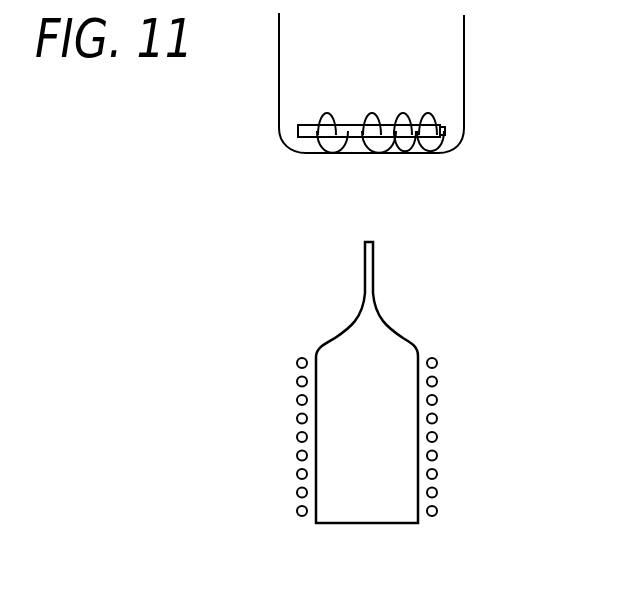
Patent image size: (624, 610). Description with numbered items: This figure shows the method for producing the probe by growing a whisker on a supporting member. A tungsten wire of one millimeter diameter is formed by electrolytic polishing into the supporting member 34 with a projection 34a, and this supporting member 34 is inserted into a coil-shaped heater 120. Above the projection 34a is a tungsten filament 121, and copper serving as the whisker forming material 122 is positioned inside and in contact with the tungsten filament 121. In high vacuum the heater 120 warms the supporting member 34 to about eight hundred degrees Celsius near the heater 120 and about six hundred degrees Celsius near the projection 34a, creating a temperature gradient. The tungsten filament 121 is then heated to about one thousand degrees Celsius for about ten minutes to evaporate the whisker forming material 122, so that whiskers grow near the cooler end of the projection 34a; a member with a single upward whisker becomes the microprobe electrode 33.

The tungsten filament 121 is at (458, 150).
The whisker forming material 122 is at (445, 133).
The microprobe electrode 33 is at (374, 250).
The projection 34a is at (381, 311).
The supporting member 34 is at (392, 518).
The heater 120 is at (437, 400).